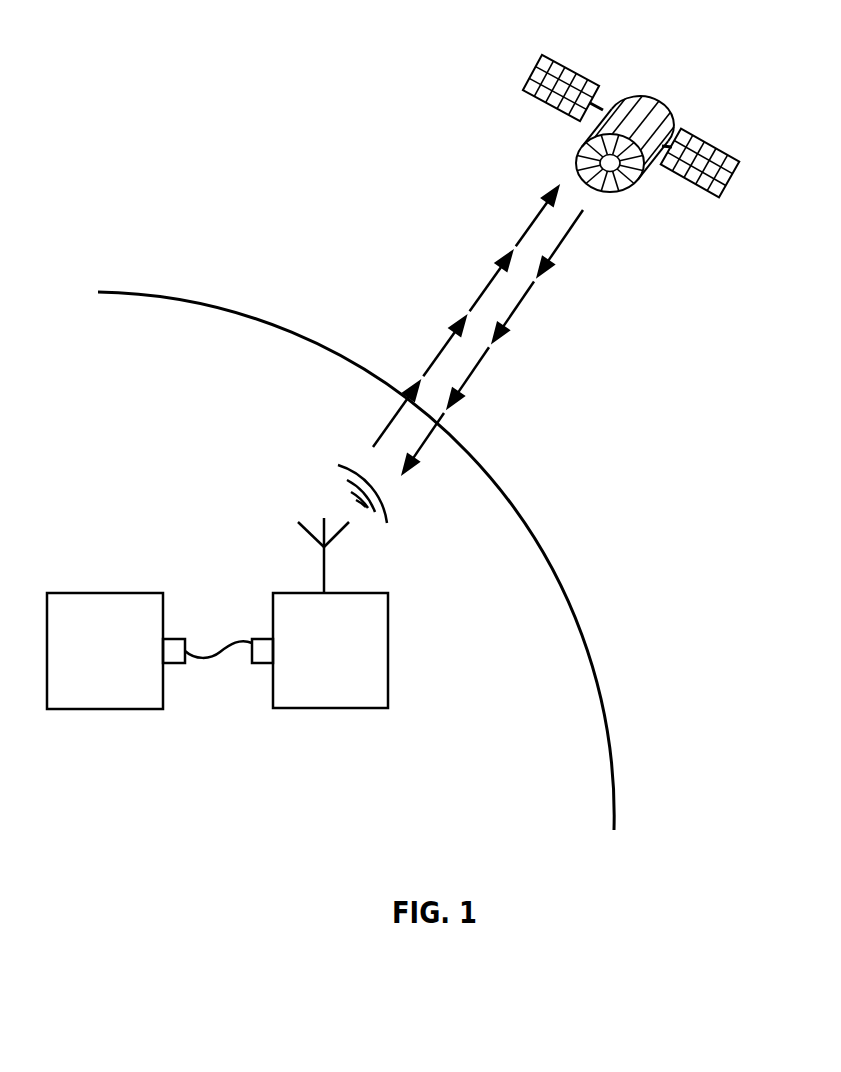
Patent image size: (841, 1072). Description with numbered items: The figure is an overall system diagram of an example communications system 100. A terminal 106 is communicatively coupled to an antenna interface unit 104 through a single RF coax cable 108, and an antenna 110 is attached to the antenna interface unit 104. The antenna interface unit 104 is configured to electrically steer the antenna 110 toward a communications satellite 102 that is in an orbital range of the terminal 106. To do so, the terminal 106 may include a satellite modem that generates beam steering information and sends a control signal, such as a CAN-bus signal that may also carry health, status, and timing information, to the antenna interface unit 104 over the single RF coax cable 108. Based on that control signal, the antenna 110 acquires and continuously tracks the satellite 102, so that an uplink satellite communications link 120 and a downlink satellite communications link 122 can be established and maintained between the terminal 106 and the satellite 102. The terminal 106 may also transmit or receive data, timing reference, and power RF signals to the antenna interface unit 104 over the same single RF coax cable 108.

The communications system 100 is at (78, 57).
The satellite 102 is at (660, 118).
The antenna interface unit 104 is at (388, 663).
The terminal 106 is at (97, 593).
The single RF coax cable 108 is at (210, 659).
The antenna 110 is at (327, 578).
The uplink satellite communications link 120 is at (482, 293).
The downlink satellite communications link 122 is at (477, 377).